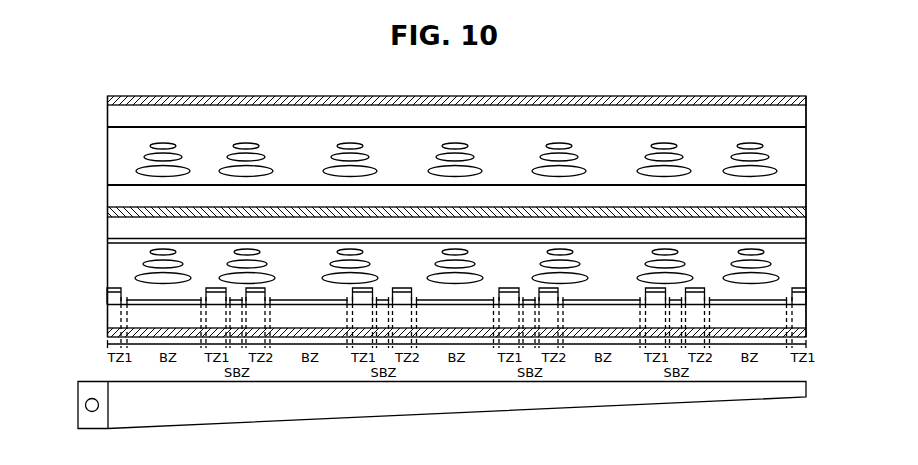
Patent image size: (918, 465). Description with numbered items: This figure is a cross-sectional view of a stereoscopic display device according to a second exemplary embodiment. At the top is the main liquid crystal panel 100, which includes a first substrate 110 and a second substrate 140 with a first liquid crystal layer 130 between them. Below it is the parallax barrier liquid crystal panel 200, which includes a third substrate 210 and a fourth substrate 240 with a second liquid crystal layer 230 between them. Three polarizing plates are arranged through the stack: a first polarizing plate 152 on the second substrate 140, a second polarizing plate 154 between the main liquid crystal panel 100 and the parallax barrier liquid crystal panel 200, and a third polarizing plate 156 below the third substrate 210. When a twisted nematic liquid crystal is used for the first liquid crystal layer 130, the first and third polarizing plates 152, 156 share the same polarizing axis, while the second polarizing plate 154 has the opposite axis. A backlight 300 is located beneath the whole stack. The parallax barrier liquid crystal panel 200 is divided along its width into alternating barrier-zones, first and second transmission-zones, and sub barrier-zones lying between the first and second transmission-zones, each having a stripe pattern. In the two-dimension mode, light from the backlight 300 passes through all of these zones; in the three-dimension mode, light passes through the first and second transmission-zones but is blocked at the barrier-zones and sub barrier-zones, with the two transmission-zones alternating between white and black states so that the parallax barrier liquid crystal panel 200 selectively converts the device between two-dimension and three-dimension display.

The main liquid crystal panel 100 is at (818, 103).
The first substrate 110 is at (108, 198).
The first liquid crystal layer 130 is at (108, 157).
The second substrate 140 is at (108, 114).
The first polarizing plate 152 is at (807, 96).
The second polarizing plate 154 is at (807, 208).
The third polarizing plate 156 is at (806, 331).
The parallax barrier liquid crystal panel 200 is at (818, 215).
The third substrate 210 is at (108, 317).
The second liquid crystal layer 230 is at (108, 273).
The fourth substrate 240 is at (108, 229).
The backlight 300 is at (783, 392).